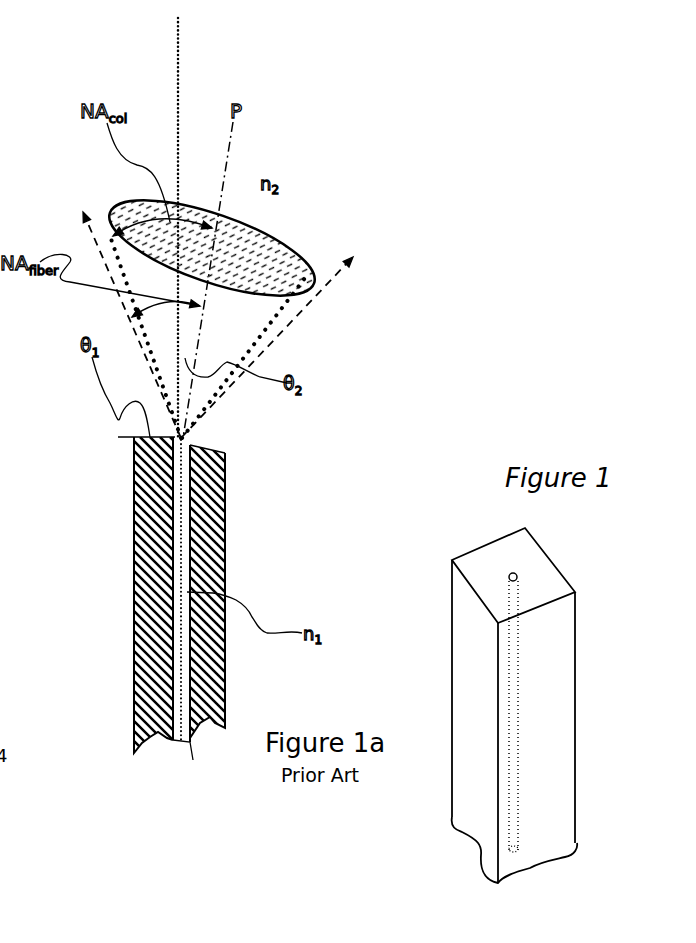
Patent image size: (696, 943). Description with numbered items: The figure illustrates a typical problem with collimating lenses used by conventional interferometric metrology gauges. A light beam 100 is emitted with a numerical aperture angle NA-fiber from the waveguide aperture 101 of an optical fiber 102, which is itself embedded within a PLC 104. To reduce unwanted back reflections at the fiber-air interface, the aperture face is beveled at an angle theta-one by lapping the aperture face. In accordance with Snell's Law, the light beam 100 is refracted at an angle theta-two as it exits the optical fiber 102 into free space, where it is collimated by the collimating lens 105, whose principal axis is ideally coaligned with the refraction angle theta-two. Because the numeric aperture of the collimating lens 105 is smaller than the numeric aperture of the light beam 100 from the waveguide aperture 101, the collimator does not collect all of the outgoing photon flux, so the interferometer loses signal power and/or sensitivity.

In FIG. 1A, the light beam 100 is at (307, 307).
In FIG. 1A, the waveguide aperture 101 is at (190, 440).
In FIG. 1, the waveguide aperture 101 is at (516, 575).
In FIG. 1A, the optical fiber 102 is at (178, 525).
In FIG. 1, the optical fiber 102 is at (517, 738).
In FIG. 1A, the PLC 104 is at (210, 675).
In FIG. 1, the PLC 104 is at (532, 665).
In FIG. 1A, the collimating lens 105 is at (273, 250).